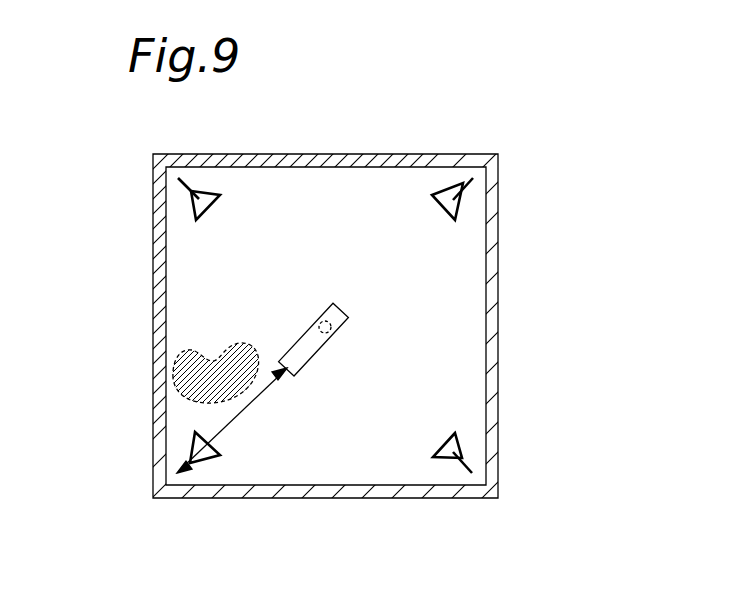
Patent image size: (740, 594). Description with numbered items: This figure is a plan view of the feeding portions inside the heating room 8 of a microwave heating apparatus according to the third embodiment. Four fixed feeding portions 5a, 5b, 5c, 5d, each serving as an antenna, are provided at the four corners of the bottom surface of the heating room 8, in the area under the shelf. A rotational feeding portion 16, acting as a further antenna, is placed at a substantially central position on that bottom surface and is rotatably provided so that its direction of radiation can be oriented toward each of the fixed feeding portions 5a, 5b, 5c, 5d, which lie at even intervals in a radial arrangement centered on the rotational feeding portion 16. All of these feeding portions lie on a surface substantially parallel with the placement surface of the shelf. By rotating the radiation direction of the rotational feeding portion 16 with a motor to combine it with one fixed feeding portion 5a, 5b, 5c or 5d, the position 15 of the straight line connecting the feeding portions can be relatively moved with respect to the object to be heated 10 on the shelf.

The heating room 8 is at (290, 155).
The object to be heated 10 is at (183, 380).
The position of the straight line connecting the feeding portions 15 is at (237, 415).
The rotational feeding portion 16 is at (328, 342).
The feeding portion 5a is at (190, 448).
The feeding portion 5b is at (440, 458).
The feeding portion 5c is at (455, 205).
The feeding portion 5d is at (188, 210).